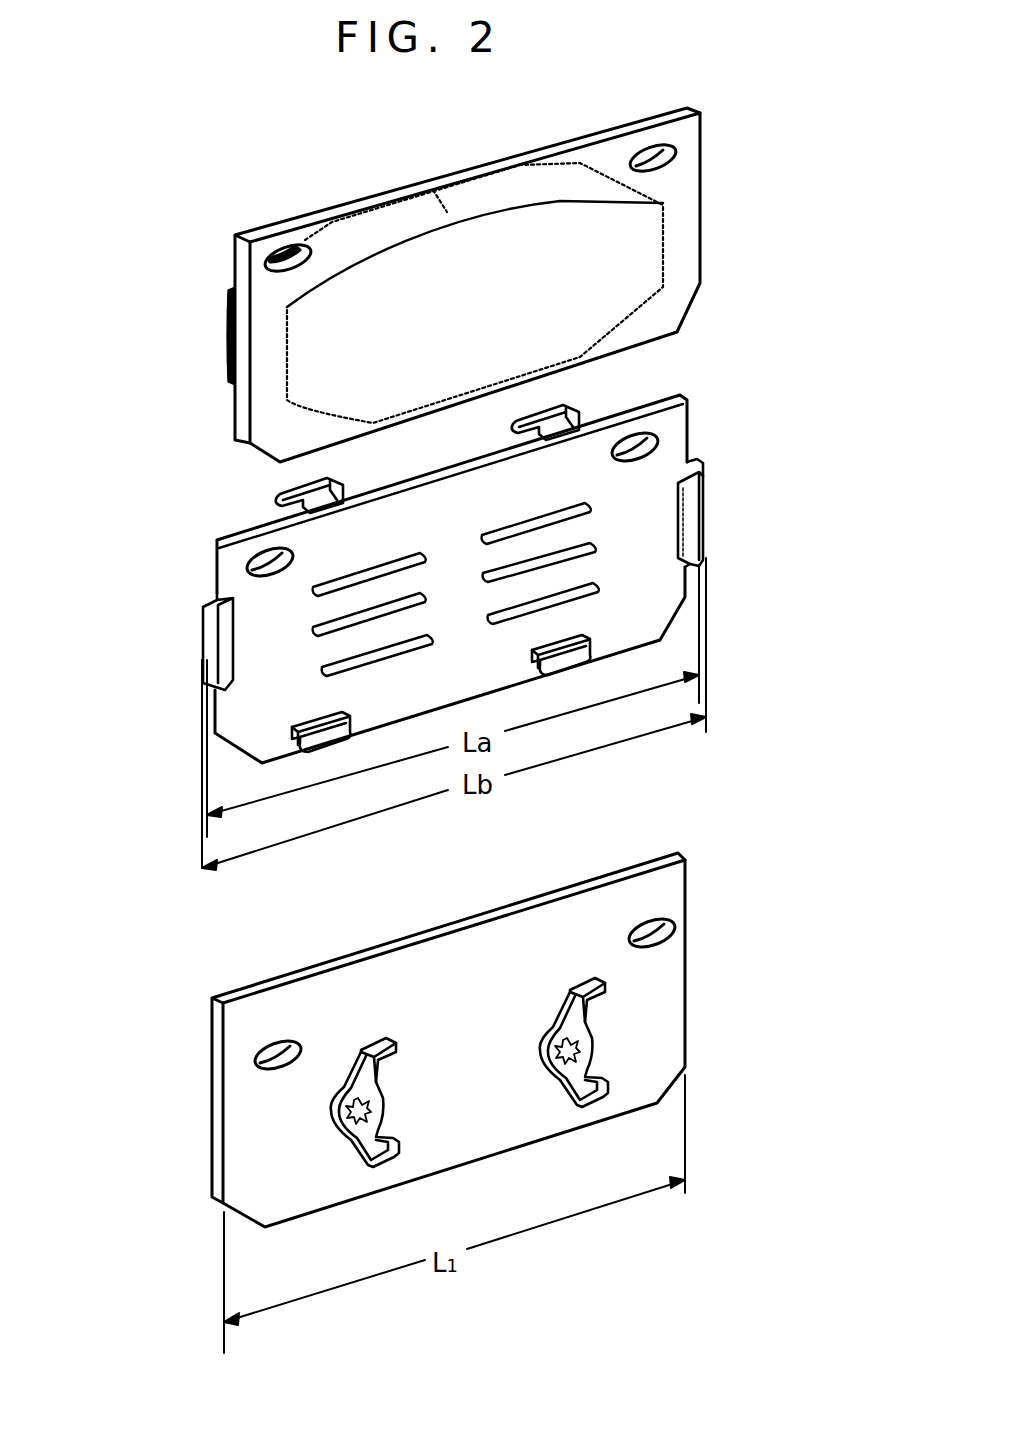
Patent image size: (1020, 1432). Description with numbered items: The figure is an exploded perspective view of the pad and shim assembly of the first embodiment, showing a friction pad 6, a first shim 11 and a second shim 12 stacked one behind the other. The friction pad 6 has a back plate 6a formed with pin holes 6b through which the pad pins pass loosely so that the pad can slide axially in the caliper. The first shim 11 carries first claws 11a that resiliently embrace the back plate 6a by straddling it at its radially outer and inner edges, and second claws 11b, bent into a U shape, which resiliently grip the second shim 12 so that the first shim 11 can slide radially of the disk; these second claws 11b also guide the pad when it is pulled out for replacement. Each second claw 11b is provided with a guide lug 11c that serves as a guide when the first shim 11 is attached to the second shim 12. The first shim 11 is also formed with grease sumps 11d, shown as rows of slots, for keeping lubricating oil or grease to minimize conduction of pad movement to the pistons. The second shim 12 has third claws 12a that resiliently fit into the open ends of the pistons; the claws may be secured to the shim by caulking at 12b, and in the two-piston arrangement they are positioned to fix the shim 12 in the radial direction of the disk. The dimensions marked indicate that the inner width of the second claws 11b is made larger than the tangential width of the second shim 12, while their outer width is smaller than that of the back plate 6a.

The friction pad 6 is at (705, 190).
The back plate 6a is at (683, 272).
The pin hole 6b is at (665, 153).
The first shim 11 is at (211, 553).
The first claw 11a is at (587, 393).
The second claw 11b is at (692, 507).
The guide lug 11c is at (217, 698).
The grease sump 11d is at (553, 600).
The second shim 12 is at (631, 1027).
The third claw 12a is at (668, 1085).
The caulking 12b is at (548, 1083).